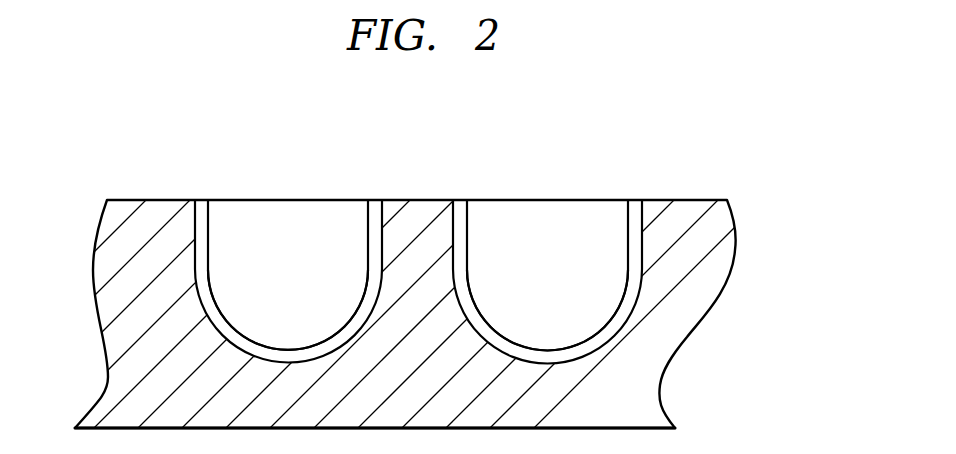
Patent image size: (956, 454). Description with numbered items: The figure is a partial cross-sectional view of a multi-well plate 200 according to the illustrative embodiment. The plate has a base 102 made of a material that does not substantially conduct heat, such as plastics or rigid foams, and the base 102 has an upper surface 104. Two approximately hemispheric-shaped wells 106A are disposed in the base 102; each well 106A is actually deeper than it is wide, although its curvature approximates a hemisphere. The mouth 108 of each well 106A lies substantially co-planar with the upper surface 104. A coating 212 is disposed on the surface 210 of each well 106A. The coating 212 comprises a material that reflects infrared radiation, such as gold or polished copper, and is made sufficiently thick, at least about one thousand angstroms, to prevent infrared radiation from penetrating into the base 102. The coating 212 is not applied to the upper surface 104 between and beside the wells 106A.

The multi-well plate 200 is at (687, 93).
The base 102 is at (678, 340).
The upper surface 104 is at (418, 199).
The well 106A is at (295, 218).
The mouth 108 is at (238, 199).
The surface 210 is at (225, 327).
The coating 212 is at (486, 330).